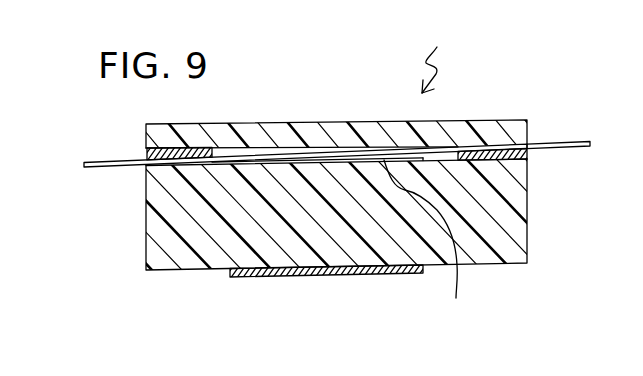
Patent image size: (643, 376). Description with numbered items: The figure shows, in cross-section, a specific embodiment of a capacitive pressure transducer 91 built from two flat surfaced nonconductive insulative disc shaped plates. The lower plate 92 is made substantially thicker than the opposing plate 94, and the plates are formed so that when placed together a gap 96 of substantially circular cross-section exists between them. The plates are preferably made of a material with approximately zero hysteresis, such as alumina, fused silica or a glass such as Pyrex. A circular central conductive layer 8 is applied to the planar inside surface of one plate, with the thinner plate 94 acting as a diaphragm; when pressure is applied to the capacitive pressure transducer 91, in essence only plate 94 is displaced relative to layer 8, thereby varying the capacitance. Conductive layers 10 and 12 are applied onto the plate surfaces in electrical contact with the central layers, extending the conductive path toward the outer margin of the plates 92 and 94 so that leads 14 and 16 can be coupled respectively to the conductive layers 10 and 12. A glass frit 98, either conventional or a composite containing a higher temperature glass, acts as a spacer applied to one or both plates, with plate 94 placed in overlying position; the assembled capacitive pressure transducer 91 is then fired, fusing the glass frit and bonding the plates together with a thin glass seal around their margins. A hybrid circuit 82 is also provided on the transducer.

The capacitive pressure transducer 91 is at (430, 58).
The plate 94 is at (316, 124).
The plate 92 is at (173, 269).
The gap 96 is at (233, 152).
The glass frit 98 is at (486, 161).
The conductive layer 12 is at (147, 155).
The conductive layer 10 is at (488, 147).
The hybrid circuit 82 is at (310, 278).
The lead 16 is at (85, 163).
The lead 14 is at (560, 142).
The conductive layer 8 is at (423, 243).